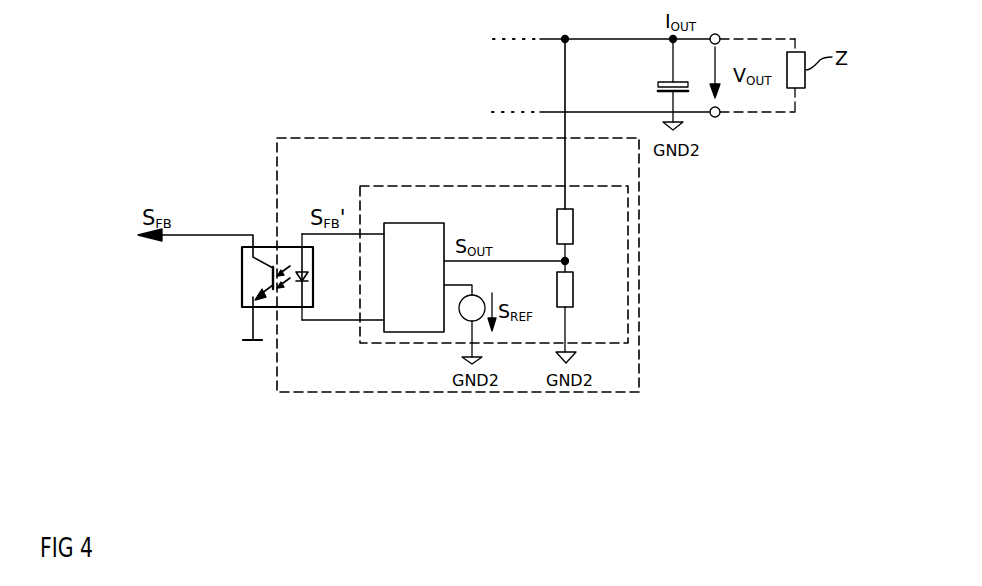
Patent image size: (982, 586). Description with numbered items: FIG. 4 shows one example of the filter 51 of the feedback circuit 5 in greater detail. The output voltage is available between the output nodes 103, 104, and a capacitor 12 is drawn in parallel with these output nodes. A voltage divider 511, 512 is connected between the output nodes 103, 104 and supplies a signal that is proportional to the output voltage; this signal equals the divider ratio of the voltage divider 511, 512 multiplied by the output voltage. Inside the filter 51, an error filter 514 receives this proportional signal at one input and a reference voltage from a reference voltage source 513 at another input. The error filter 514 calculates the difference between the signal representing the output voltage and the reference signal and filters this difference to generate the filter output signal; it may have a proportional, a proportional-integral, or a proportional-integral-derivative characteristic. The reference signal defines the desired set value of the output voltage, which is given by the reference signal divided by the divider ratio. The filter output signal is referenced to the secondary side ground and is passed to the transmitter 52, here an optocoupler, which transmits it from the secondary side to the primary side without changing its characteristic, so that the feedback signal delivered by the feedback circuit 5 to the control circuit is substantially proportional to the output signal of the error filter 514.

The feedback circuit 5 is at (443, 138).
The filter 51 is at (482, 186).
The transmitter 52 is at (242, 278).
The voltage divider 511 is at (573, 232).
The voltage divider 512 is at (573, 295).
The reference voltage source 513 is at (481, 297).
The error filter 514 is at (413, 223).
The output capacitor 12 is at (656, 87).
The output node 103 is at (720, 36).
The output node 104 is at (720, 116).